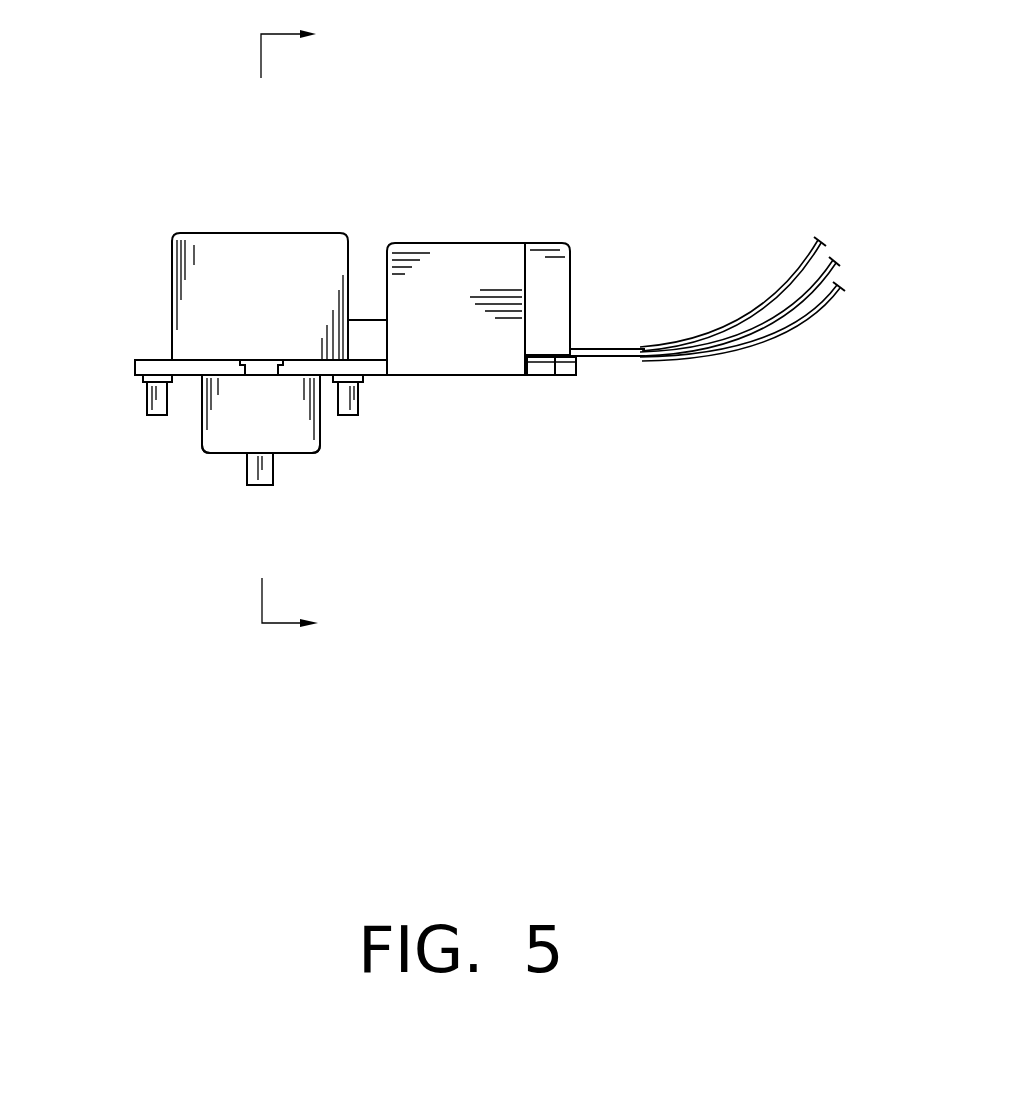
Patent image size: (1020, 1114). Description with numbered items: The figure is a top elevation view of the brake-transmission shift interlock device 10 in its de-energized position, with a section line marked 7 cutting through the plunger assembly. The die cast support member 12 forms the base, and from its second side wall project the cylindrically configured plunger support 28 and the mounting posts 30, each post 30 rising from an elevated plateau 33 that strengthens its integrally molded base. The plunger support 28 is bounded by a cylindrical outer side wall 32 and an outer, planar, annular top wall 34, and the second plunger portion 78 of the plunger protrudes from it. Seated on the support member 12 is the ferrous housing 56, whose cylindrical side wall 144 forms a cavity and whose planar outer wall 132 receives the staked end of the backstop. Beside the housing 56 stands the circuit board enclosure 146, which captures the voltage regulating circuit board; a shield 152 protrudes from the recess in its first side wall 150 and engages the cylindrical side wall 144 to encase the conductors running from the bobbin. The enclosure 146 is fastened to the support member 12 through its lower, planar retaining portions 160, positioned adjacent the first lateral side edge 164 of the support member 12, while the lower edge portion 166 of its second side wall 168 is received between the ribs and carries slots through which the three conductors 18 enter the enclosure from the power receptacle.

The brake-transmission shift interlock device 10 is at (470, 185).
The support member 12 is at (140, 365).
The conductors 18 is at (838, 281).
The plunger support 28 is at (320, 420).
The mounting posts 30 is at (147, 398).
The cylindrical outer side wall 32 is at (202, 440).
The elevated plateau 33 is at (143, 378).
The outer planar annular top wall 34 is at (302, 456).
The housing 56 is at (227, 263).
The second plunger portion 78 is at (262, 488).
The planar outer wall 132 is at (302, 240).
The cylindrical side wall 144 is at (172, 274).
The circuit board enclosure 146 is at (533, 248).
The first side wall 150 is at (390, 292).
The shield 152 is at (366, 327).
The retaining portions 160 is at (555, 378).
The first lateral side edge 164 is at (565, 373).
The lower edge portion 166 is at (576, 364).
The second side wall 168 is at (573, 305).
The section line 7- 7 is at (298, 331).